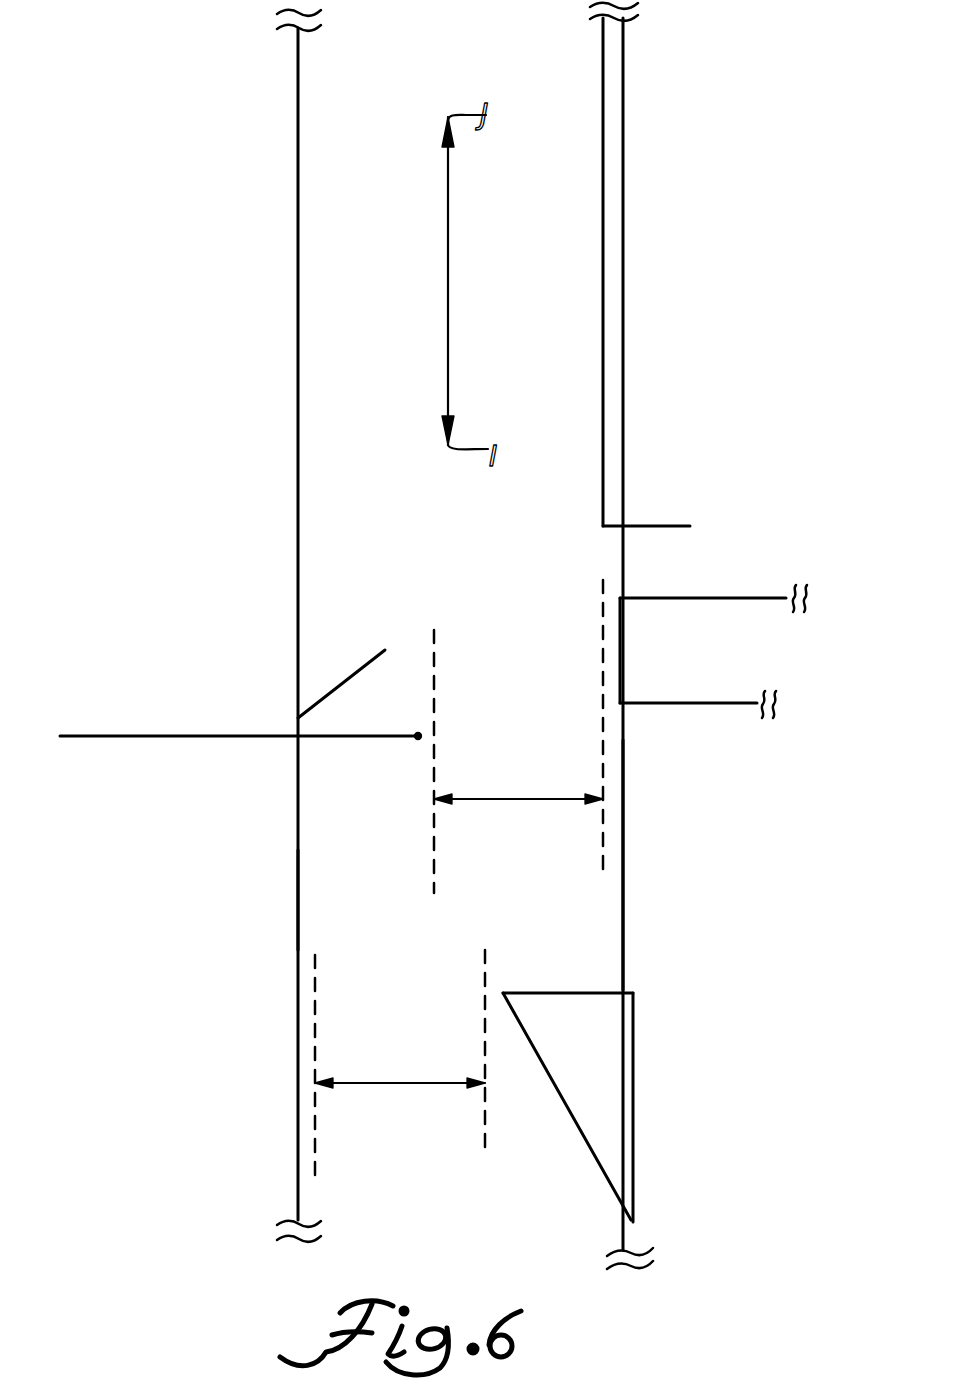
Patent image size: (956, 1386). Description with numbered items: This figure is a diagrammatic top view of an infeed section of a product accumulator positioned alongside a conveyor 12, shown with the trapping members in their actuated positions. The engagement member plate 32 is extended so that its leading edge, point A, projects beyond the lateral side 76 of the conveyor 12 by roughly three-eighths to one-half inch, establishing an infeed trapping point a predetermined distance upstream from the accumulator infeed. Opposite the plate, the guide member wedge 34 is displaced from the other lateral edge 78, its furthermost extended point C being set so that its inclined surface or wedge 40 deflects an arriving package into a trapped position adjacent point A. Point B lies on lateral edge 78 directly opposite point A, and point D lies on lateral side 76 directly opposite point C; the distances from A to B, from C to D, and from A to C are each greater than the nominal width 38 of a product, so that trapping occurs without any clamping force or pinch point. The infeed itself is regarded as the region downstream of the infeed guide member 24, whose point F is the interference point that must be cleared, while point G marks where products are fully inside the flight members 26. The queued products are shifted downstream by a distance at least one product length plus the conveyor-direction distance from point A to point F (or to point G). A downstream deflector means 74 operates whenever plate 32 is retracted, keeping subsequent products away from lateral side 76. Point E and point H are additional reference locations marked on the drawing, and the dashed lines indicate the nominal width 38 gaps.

The conveyor 12 is at (298, 600).
The guide member 24 is at (713, 651).
The flight member 26 is at (603, 432).
The engagement member plate 32 is at (236, 738).
The guide member wedge 34 is at (637, 1133).
The nominal width 38 is at (548, 801).
The inclined surface or wedge 40 is at (592, 1150).
The downstream deflector means 74 is at (348, 682).
The lateral side 76 is at (298, 897).
The lateral edge 78 is at (625, 873).
The leading edge of plate A is at (418, 740).
The point B is at (615, 735).
The point C is at (504, 990).
The point D is at (298, 990).
The point E is at (620, 703).
The interference point F is at (620, 598).
The point G is at (603, 527).
The point H is at (384, 648).